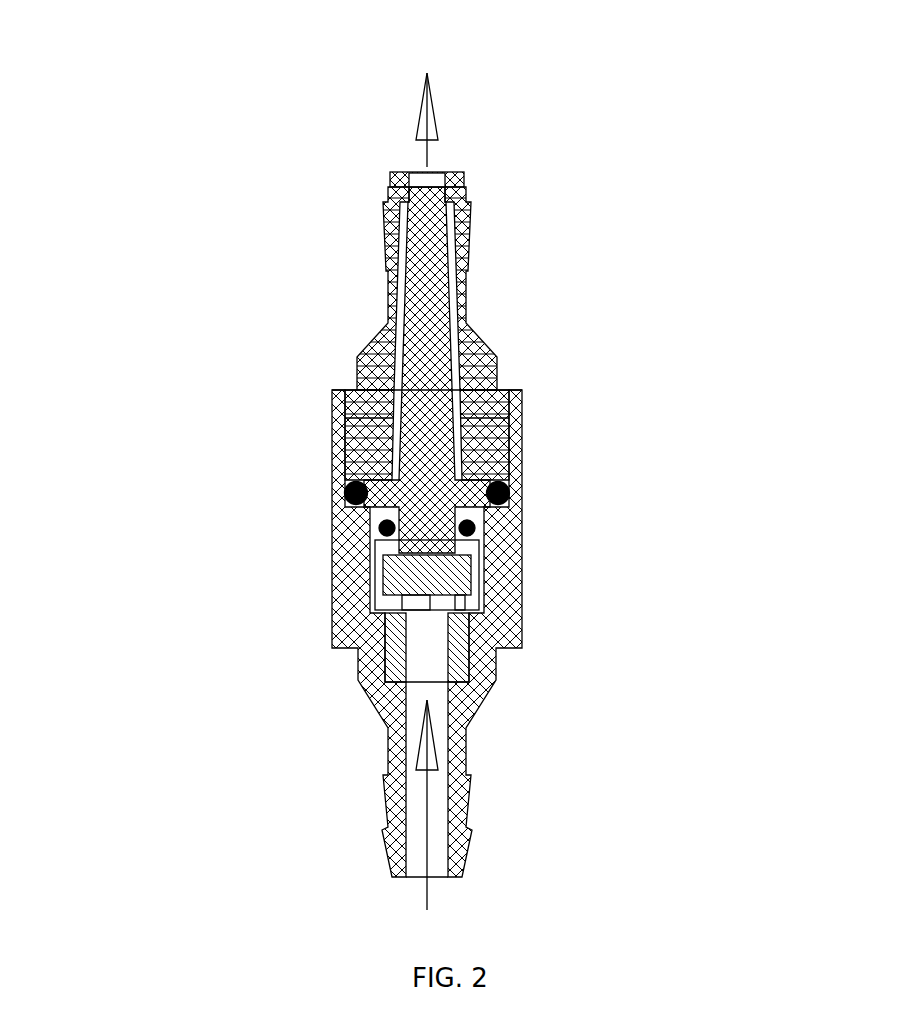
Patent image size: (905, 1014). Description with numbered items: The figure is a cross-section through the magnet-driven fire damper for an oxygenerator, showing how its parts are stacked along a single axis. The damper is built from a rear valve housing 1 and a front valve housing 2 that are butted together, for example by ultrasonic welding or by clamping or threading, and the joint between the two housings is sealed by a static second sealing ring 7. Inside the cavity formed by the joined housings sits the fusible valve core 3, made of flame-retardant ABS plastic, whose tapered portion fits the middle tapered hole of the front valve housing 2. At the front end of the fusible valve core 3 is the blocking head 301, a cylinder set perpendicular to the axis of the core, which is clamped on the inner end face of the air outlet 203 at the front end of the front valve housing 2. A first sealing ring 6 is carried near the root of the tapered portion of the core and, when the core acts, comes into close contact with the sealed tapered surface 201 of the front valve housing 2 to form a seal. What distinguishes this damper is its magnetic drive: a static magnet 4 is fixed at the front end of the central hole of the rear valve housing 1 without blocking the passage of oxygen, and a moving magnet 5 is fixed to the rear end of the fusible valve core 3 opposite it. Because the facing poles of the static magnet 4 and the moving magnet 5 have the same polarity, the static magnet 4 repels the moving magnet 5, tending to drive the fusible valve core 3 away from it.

The rear valve housing 1 is at (372, 707).
The front valve housing 2 is at (356, 346).
The sealed tapered surface 201 is at (503, 486).
The air outlet 203 is at (416, 176).
The fusible valve core 3 is at (436, 402).
The blocking head 301 is at (446, 195).
The static magnet 4 is at (458, 650).
The moving magnet 5 is at (399, 578).
The first sealing ring 6 is at (474, 532).
The second sealing ring 7 is at (349, 489).